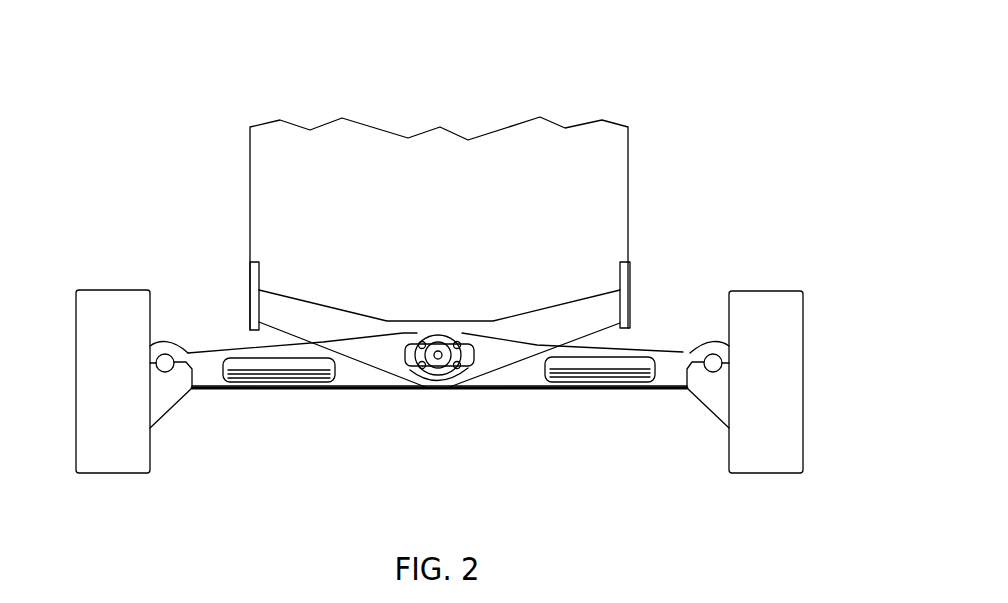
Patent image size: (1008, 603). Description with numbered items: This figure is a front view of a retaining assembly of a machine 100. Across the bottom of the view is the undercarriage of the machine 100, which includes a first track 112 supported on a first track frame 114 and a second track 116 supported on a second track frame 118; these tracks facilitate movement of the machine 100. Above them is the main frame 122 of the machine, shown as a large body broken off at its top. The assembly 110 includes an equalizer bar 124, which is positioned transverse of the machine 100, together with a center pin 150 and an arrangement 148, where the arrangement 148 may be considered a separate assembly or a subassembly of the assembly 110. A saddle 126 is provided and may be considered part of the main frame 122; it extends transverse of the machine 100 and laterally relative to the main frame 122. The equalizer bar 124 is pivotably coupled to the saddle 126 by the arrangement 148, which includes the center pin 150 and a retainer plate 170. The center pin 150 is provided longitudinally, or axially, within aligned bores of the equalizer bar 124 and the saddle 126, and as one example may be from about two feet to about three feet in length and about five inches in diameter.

The machine 100 is at (822, 83).
The assembly 110 is at (748, 177).
The first track 112 is at (803, 310).
The first track frame 114 is at (708, 413).
The second track 116 is at (76, 315).
The second track frame 118 is at (167, 413).
The main frame 122 is at (630, 183).
The equalizer bar 124 is at (297, 388).
The saddle 126 is at (518, 358).
The arrangement 148 is at (417, 360).
The center pin 150 is at (448, 342).
The retainer plate 170 is at (432, 340).